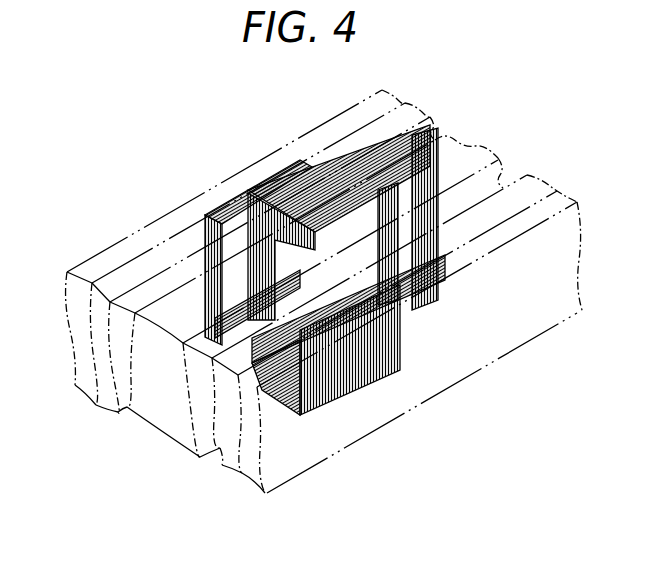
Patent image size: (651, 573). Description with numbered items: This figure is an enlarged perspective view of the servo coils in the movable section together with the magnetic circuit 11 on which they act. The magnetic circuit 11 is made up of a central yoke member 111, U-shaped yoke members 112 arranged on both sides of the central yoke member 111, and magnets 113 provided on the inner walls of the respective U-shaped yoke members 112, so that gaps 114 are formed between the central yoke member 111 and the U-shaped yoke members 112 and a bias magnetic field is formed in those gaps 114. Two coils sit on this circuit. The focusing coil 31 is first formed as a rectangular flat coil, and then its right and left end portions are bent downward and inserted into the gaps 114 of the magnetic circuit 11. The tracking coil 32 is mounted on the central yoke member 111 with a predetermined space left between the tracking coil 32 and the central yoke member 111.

The magnetic circuit 11 is at (420, 102).
The focusing coil 31 is at (395, 300).
The tracking coil 32 is at (288, 187).
The central yoke member 111 is at (172, 428).
The U-shaped yoke member 112 is at (73, 392).
The magnet 113 is at (104, 415).
The gap 114 is at (131, 437).